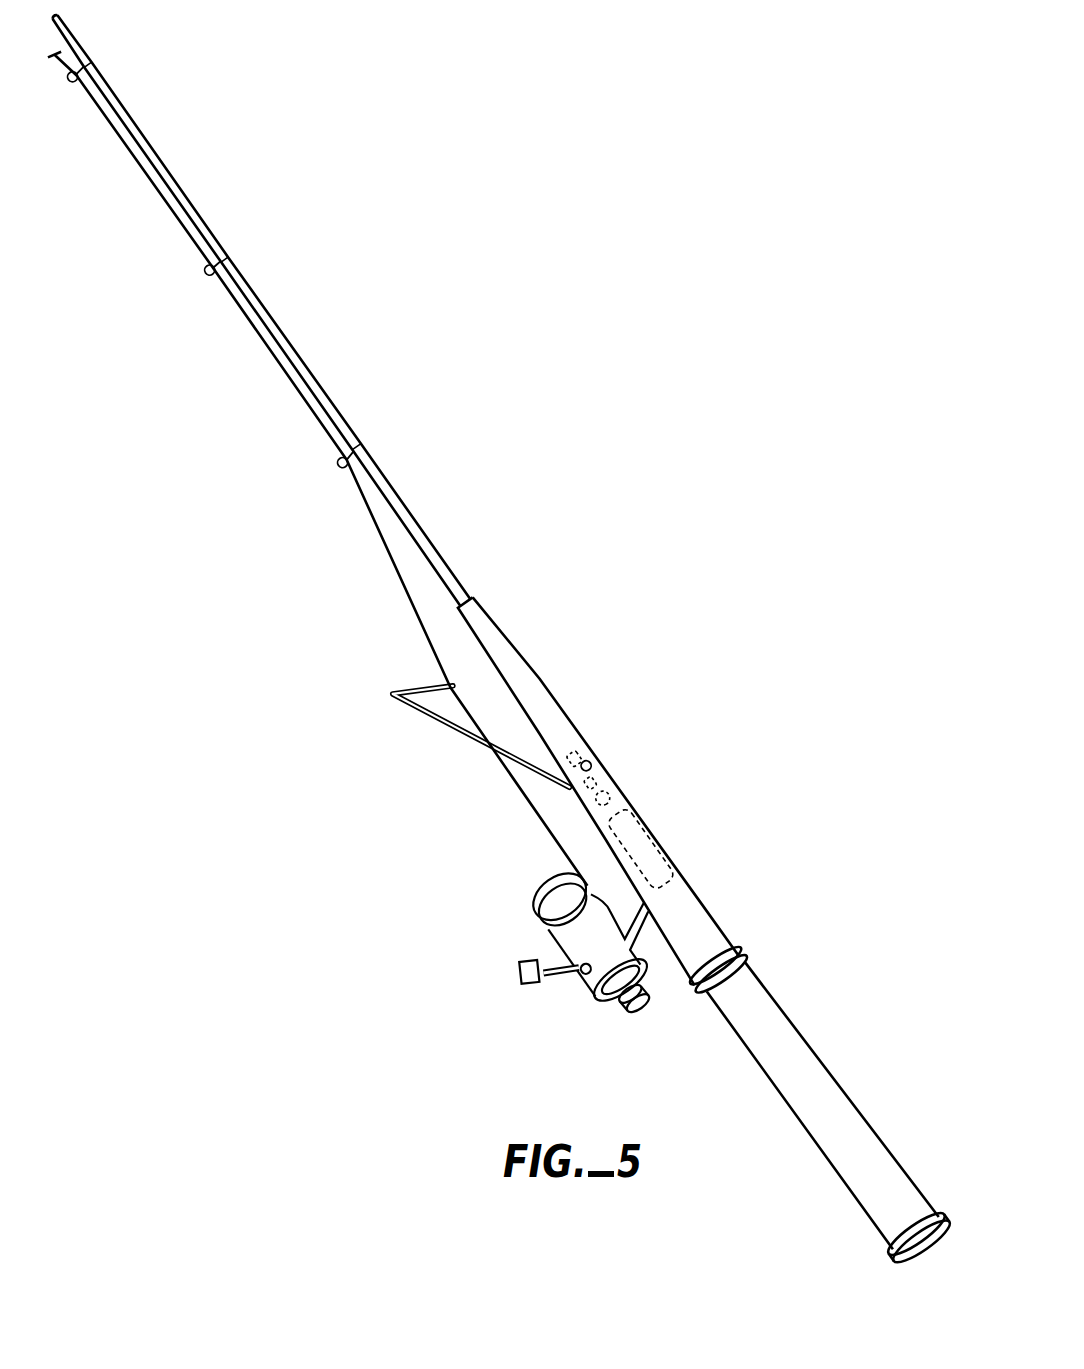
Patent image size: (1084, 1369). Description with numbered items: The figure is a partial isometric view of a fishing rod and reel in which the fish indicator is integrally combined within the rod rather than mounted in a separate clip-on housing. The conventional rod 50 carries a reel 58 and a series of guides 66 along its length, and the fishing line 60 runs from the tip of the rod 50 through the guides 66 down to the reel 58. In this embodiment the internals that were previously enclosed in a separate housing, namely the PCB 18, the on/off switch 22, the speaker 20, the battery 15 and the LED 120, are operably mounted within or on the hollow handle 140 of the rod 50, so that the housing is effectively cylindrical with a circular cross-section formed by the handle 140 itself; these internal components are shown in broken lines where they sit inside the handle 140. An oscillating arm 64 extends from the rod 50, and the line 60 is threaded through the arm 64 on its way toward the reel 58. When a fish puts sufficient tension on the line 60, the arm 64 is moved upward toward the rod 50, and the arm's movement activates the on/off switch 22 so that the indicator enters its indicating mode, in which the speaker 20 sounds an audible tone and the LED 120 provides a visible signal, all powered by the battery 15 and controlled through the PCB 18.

The battery 15 is at (666, 858).
The PCB 18 is at (574, 747).
The speaker 20 is at (612, 797).
The on/off switch 22 is at (598, 777).
The rod 50 is at (486, 613).
The reel 58 is at (573, 933).
The fishing line 60 is at (387, 553).
The oscillating arm 64 is at (436, 730).
The guides 66 is at (70, 83).
The LED 120 is at (593, 762).
The hollow handle 140 is at (541, 673).